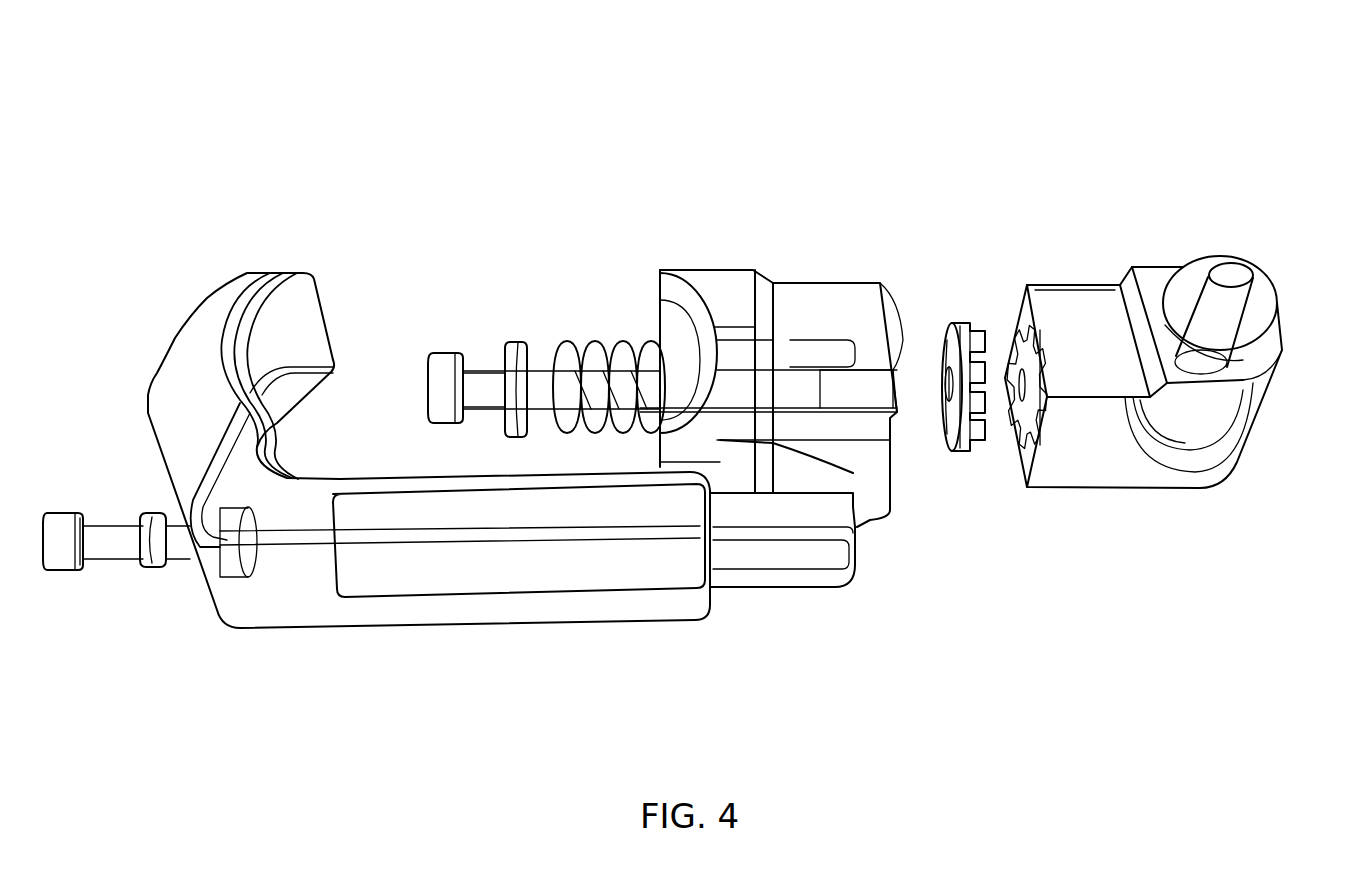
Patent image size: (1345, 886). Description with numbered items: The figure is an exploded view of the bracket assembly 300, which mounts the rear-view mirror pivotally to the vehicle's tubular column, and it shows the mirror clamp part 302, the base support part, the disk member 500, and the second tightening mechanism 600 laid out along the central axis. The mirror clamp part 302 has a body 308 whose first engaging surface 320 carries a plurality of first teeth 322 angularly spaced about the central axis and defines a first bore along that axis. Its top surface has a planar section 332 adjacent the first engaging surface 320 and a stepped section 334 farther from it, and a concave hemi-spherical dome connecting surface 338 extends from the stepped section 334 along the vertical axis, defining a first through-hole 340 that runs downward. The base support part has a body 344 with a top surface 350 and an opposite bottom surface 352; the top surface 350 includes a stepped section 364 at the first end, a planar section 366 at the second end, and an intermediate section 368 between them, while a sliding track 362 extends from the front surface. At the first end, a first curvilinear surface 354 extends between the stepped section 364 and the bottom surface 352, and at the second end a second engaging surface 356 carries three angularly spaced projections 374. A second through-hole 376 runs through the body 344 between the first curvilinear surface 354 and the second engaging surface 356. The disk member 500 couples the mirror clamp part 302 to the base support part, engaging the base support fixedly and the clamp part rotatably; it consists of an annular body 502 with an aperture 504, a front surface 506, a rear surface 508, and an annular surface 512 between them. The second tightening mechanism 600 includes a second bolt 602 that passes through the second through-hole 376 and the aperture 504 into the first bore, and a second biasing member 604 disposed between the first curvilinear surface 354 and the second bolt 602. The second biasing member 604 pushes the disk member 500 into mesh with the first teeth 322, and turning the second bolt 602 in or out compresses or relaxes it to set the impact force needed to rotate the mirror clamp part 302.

The bracket assembly 300 is at (543, 145).
The mirror clamp part 302 is at (1167, 517).
The body 308 is at (1213, 518).
The first engaging surface 320 is at (1040, 490).
The first teeth 322 is at (1013, 313).
The planar section 332 is at (1065, 298).
The stepped section 334 is at (1157, 283).
The dome connecting surface 338 is at (1258, 308).
The first through-hole 340 is at (1228, 272).
The body 344 is at (775, 283).
The top surface 350 is at (833, 423).
The bottom surface 352 is at (738, 560).
The first curvilinear surface 354 is at (553, 436).
The second engaging surface 356 is at (970, 327).
The sliding track 362 is at (700, 613).
The stepped section 364 is at (700, 330).
The planar section 366 is at (830, 362).
The intermediate section 368 is at (815, 436).
The projections 374 is at (893, 327).
The second through-hole 376 is at (693, 360).
The disk member 500 is at (928, 307).
The annular body 502 is at (932, 593).
The aperture 504 is at (863, 530).
The front surface 506 is at (938, 447).
The rear surface 508 is at (987, 455).
The annular surface 512 is at (973, 450).
The second tightening mechanism 600 is at (473, 285).
The second bolt 602 is at (480, 378).
The second biasing member 604 is at (604, 367).